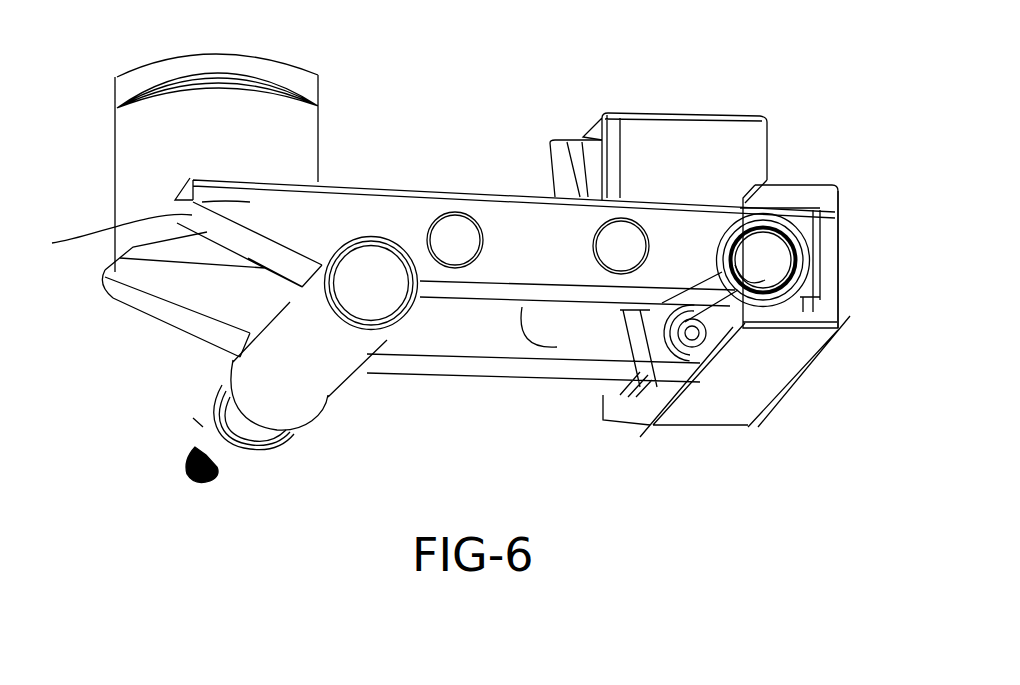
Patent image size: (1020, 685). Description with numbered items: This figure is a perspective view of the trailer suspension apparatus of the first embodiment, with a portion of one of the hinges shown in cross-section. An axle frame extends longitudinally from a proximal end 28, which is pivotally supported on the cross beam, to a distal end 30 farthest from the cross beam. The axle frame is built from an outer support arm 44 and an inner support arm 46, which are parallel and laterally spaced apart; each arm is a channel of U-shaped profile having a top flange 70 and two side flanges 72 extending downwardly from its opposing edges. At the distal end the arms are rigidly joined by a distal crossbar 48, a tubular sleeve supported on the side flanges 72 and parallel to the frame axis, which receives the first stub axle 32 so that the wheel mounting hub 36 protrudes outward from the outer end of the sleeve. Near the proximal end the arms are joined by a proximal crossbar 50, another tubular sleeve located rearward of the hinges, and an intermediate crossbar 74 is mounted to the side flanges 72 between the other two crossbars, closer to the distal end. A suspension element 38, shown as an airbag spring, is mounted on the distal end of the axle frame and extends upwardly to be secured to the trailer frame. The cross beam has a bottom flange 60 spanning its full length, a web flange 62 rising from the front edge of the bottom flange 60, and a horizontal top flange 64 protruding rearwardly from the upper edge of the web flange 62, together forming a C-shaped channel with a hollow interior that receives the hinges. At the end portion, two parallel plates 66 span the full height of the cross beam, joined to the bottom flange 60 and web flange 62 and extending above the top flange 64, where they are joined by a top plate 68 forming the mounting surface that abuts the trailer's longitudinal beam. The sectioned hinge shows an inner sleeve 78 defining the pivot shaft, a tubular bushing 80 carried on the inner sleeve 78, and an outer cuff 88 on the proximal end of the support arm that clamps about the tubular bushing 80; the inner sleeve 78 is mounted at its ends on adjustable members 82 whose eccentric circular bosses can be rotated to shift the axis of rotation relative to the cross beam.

The proximal end 28 is at (804, 318).
The distal end 30 is at (100, 288).
The first stub axle 32 is at (198, 443).
The wheel mounting hub 36 is at (197, 452).
The suspension element 38 is at (147, 128).
The outer support arm 44 is at (192, 293).
The inner support arm 46 is at (370, 203).
The distal crossbar 48 is at (313, 388).
The proximal crossbar 50 is at (557, 323).
The bottom flange 60 is at (725, 410).
The web flange 62 is at (842, 303).
The top flange 64 is at (810, 185).
The parallel plates 66 is at (647, 150).
The top plate 68 is at (681, 130).
The top flange 70 is at (187, 190).
The side flanges 72 is at (178, 202).
The intermediate crossbar 74 is at (420, 317).
The inner sleeve 78 is at (768, 247).
The tubular bushing 80 is at (741, 230).
The adjustable member 82 is at (750, 280).
The outer cuff 88 is at (800, 235).